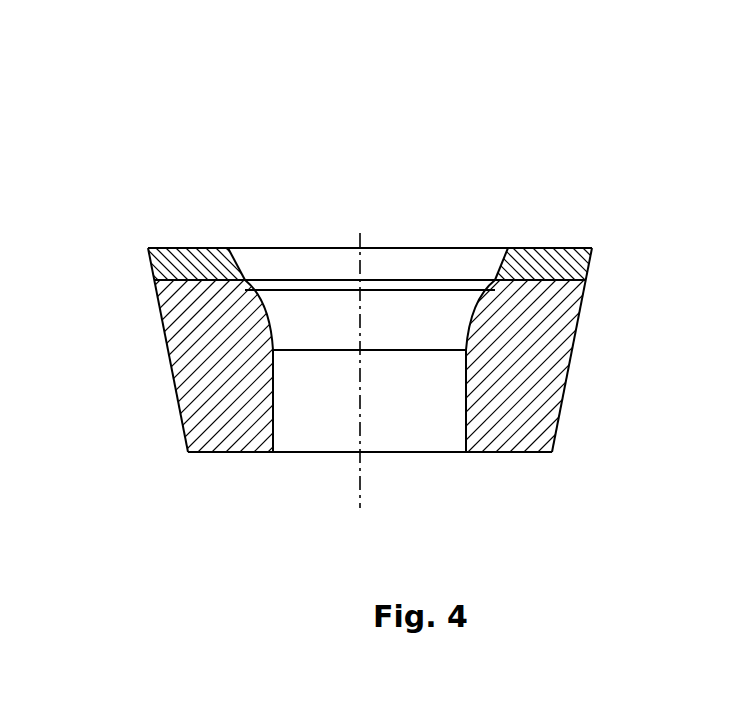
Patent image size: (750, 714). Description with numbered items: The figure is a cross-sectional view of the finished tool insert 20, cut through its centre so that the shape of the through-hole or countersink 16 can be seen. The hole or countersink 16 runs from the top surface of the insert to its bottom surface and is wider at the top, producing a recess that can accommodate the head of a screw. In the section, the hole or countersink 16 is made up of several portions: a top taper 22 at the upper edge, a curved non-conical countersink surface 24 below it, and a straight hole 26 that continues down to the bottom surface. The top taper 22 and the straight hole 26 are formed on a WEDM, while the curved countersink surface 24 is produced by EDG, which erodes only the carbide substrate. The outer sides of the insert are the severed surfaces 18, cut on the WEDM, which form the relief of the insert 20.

The die assembly 20 is at (350, 158).
The through-hole or countersink 16 is at (366, 212).
The severing lines or surfaces 18 is at (150, 371).
The top taper 22 is at (248, 257).
The curved non-conical countersink surface 24 is at (464, 316).
The straight hole 26 is at (288, 419).